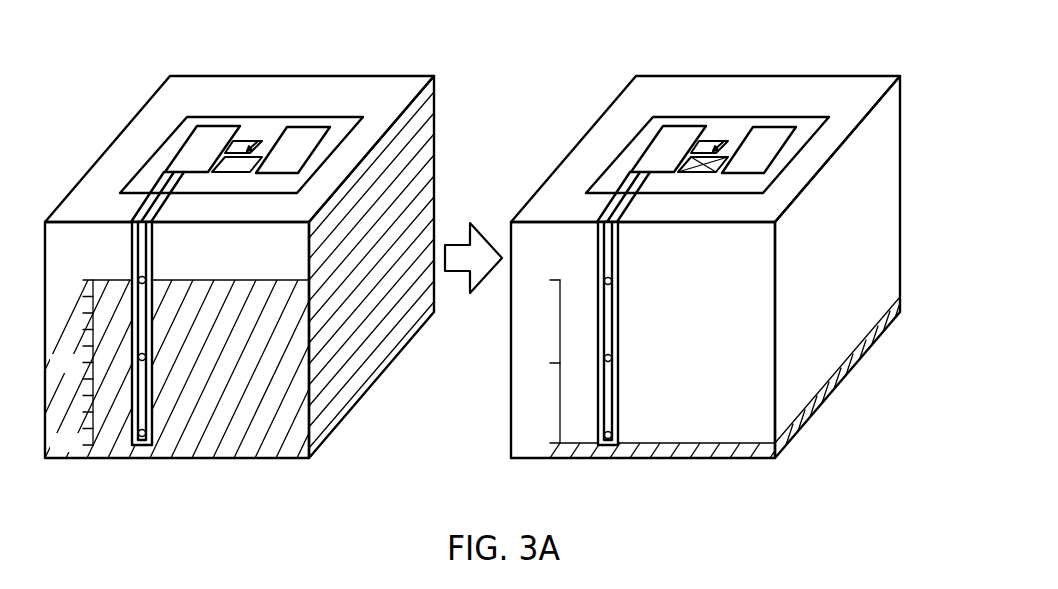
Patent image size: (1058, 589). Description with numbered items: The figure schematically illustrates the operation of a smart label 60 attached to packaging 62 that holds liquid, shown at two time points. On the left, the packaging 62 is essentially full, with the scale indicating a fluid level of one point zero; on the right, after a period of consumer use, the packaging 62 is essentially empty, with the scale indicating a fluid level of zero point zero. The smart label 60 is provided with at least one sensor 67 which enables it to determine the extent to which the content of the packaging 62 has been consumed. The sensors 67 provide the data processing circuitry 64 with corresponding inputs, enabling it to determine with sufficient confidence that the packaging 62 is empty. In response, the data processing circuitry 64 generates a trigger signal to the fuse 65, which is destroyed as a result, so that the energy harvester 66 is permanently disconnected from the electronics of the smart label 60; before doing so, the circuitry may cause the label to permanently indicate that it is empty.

The smart label 60 is at (268, 116).
The packaging 62 is at (435, 115).
The data processing circuitry 64 is at (180, 148).
The fuse 65 is at (232, 173).
The energy harvester 66 is at (317, 150).
The sensor 67 is at (146, 282).